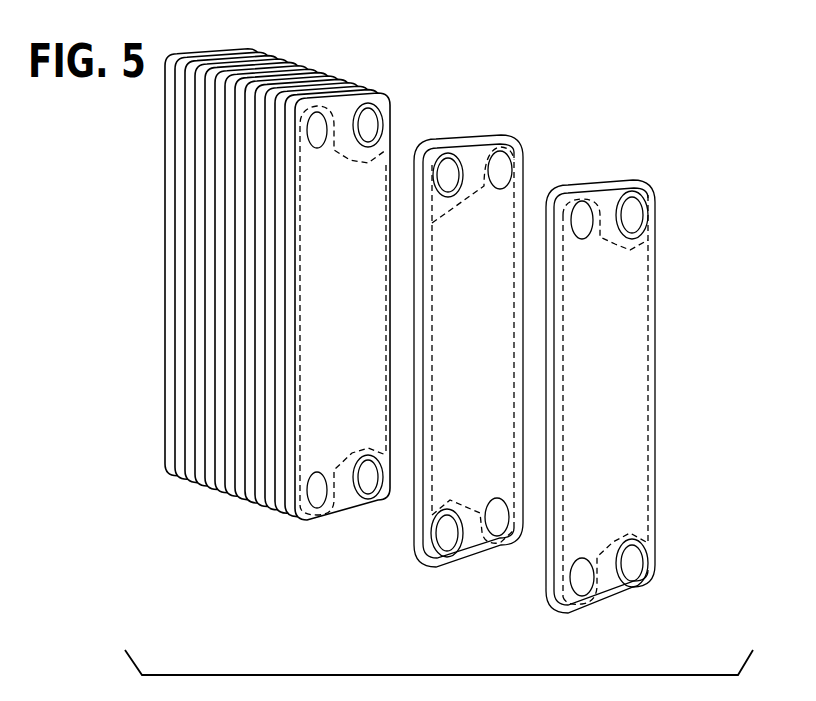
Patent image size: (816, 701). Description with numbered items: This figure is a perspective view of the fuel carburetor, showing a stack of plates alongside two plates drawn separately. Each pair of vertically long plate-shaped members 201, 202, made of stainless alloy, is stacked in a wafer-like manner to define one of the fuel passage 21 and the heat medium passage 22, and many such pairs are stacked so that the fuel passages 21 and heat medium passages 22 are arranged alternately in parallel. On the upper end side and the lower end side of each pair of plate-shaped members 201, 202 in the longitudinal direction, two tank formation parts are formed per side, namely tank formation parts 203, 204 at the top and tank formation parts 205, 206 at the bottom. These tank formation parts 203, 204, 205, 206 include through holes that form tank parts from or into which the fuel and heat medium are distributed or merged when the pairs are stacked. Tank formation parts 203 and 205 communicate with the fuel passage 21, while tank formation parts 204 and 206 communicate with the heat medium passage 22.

The fuel passage 21 is at (587, 497).
The heat medium passage 22 is at (445, 428).
The plate-shaped member 201 is at (488, 137).
The plate-shaped member 202 is at (622, 180).
The tank formation part 203 is at (447, 167).
The tank formation part 204 is at (507, 167).
The tank formation part 205 is at (445, 545).
The tank formation part 206 is at (492, 533).